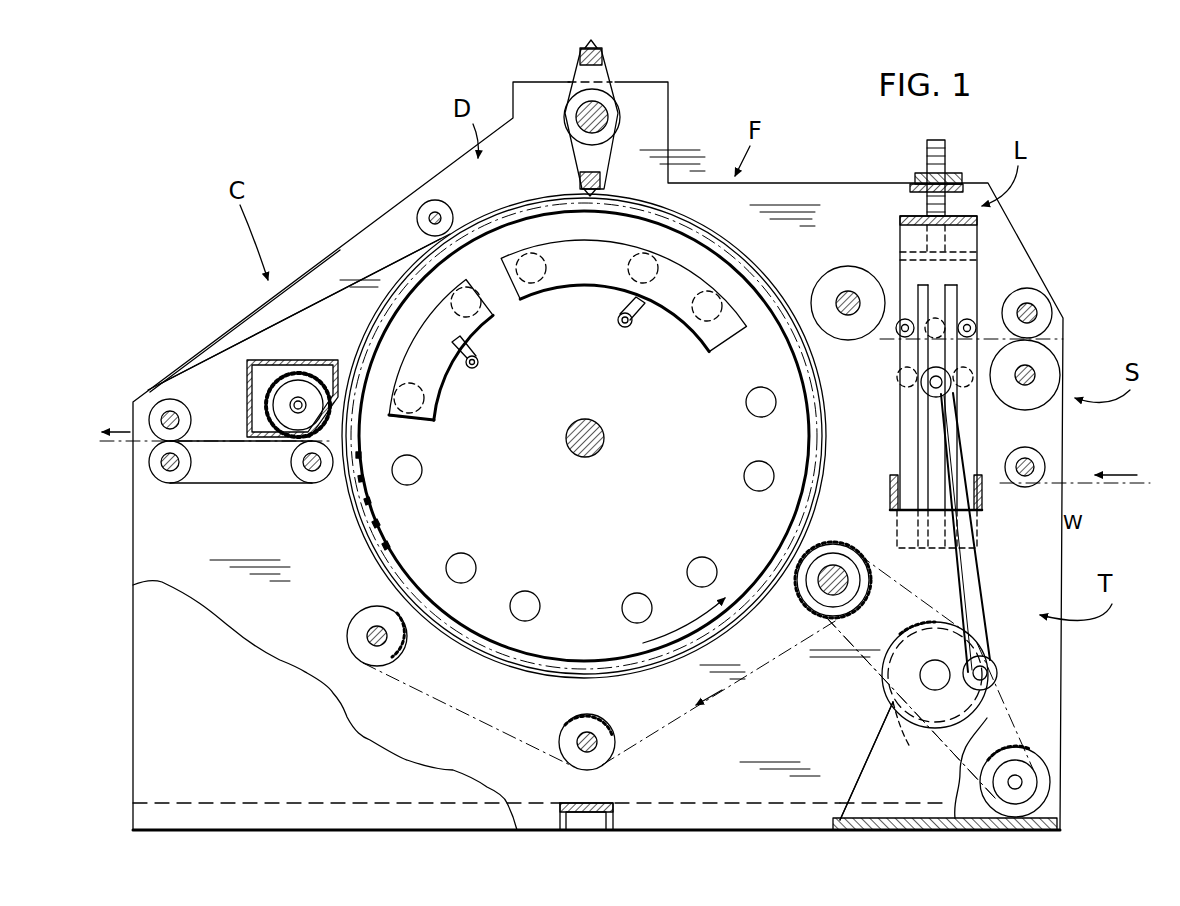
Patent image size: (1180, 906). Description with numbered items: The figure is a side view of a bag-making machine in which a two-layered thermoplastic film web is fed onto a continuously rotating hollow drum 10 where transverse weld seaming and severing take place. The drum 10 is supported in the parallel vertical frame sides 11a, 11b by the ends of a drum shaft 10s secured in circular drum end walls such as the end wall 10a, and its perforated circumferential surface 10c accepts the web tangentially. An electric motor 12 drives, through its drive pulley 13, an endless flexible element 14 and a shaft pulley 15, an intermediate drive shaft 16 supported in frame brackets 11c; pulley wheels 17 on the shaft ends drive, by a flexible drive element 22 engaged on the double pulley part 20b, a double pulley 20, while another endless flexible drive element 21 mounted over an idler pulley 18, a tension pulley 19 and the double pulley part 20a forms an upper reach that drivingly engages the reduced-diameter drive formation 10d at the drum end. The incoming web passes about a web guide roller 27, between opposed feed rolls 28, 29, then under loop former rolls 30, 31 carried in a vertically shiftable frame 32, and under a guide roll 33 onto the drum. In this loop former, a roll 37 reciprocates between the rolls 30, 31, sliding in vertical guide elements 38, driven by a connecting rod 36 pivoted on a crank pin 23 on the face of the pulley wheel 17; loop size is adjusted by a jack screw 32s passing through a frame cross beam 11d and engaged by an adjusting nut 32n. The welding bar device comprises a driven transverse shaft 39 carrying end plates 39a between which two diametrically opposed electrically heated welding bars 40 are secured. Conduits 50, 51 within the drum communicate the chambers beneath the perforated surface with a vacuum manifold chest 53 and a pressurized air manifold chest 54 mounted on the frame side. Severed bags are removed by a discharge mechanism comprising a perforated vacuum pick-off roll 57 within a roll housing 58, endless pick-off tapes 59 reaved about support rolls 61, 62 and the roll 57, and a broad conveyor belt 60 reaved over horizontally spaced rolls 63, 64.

The drum 10 is at (712, 224).
The drum end wall 10a is at (641, 418).
The circumferential web-supporting surface 10c is at (813, 341).
The drive engaging formation 10d is at (811, 510).
The drum shaft 10s is at (595, 458).
The frame side 11a is at (265, 621).
The frame side 11b is at (246, 730).
The frame bracket 11c is at (860, 796).
The frame cross beam 11d is at (912, 190).
The electric motor 12 is at (1047, 770).
The drive pulley 13 is at (1022, 782).
The endless flexible element 14 is at (1015, 745).
The shaft pulley 15 is at (913, 761).
The intermediate drive shaft 16 is at (940, 672).
The pulley wheel 17 is at (893, 712).
The idler pulley 18 is at (350, 634).
The tension pulley 19 is at (562, 738).
The double pulley 20 is at (815, 562).
The double pulley part 20a is at (840, 546).
The double pulley part 20b is at (830, 604).
The endless flexible drive element 21 is at (727, 698).
The endless flexible drive element 22 is at (844, 642).
The crank pin 23 is at (990, 672).
The web guide roller 27 is at (1040, 460).
The feed roll 28 is at (1052, 375).
The feed roll 29 is at (1040, 306).
The loop former roll 30 is at (969, 320).
The loop former roll 31 is at (903, 337).
The adjustable frame 32 is at (965, 279).
The jack screw 32s is at (927, 152).
The adjusting nut 32n is at (915, 178).
The guide roll 33 is at (848, 270).
The connecting rod 36 is at (966, 565).
The roll 37 is at (938, 314).
The guide element 38 is at (952, 362).
The transverse shaft 39 is at (604, 120).
The end plate 39a is at (612, 92).
The welding bar 40 is at (602, 56).
The conduit 50 is at (533, 292).
The conduit 51 is at (477, 316).
The vacuum manifold chest 53 is at (615, 290).
The pressurized air manifold chest 54 is at (480, 362).
The vacuum pick-off roll 57 is at (257, 326).
The roll housing 58 is at (307, 355).
The pick-off tape 59 is at (302, 281).
The conveyor belt 60 is at (240, 485).
The support roll 61 is at (165, 402).
The support roll 62 is at (433, 202).
The idler roll 63 is at (310, 484).
The driven roll 64 is at (167, 484).